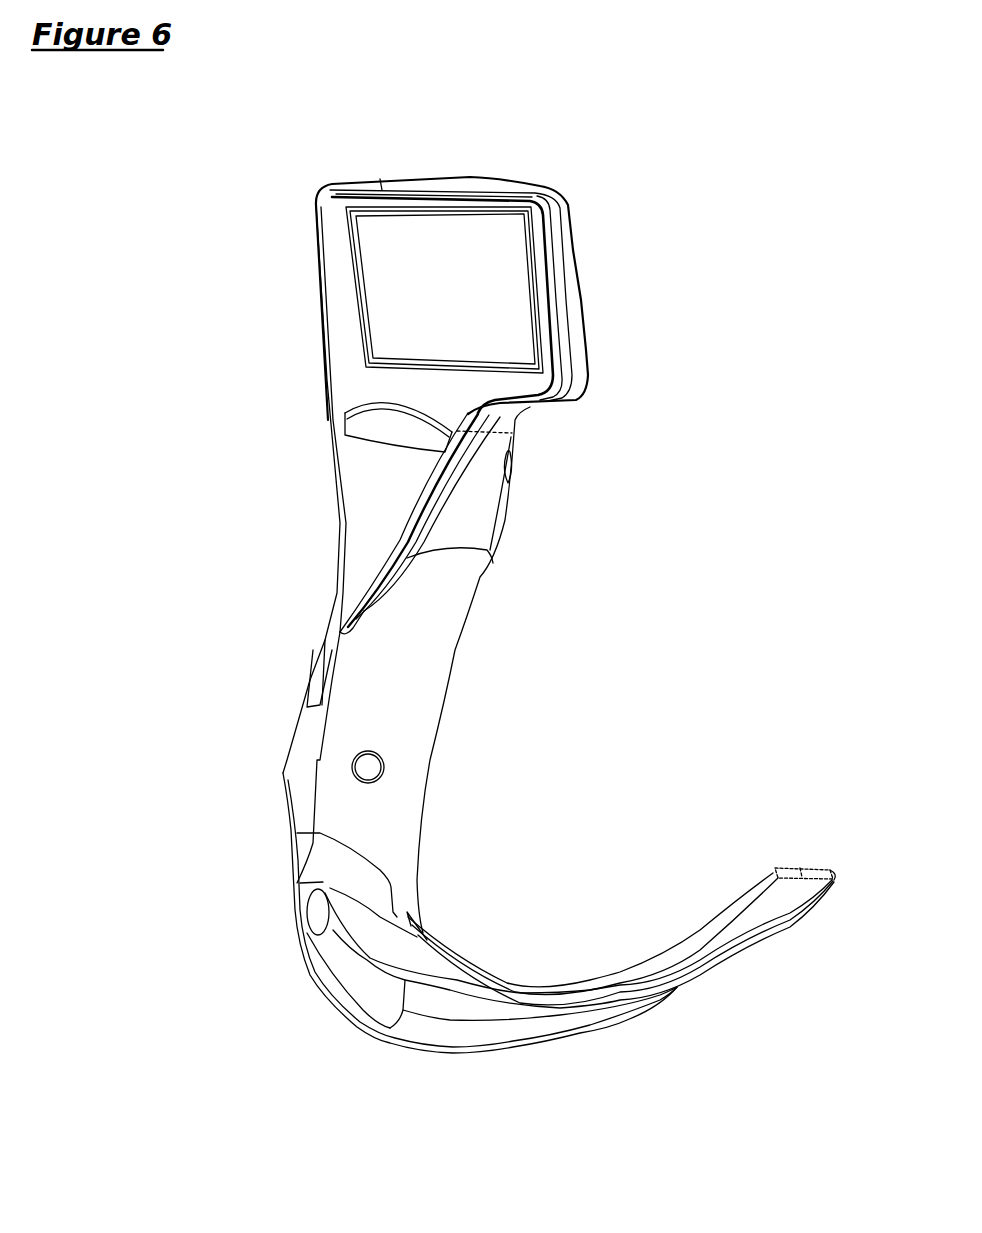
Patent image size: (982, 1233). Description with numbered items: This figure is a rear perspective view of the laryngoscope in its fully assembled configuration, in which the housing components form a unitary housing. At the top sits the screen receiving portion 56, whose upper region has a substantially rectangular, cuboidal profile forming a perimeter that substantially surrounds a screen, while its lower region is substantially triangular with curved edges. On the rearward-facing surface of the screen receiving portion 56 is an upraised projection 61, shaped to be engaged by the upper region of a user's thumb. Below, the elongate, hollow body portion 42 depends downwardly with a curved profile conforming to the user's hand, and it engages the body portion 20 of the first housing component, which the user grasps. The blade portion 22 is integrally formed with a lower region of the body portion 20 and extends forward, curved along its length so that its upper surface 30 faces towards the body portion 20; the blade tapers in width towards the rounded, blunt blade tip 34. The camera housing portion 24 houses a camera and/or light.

The body portion 20 is at (495, 670).
The blade portion 22 is at (589, 977).
The camera housing portion 24 is at (472, 1067).
The upper surface 30 is at (673, 946).
The blade tip 34 is at (810, 868).
The body portion 42 is at (262, 688).
The screen receiving portion 56 is at (328, 283).
The upraised projection 61 is at (370, 427).